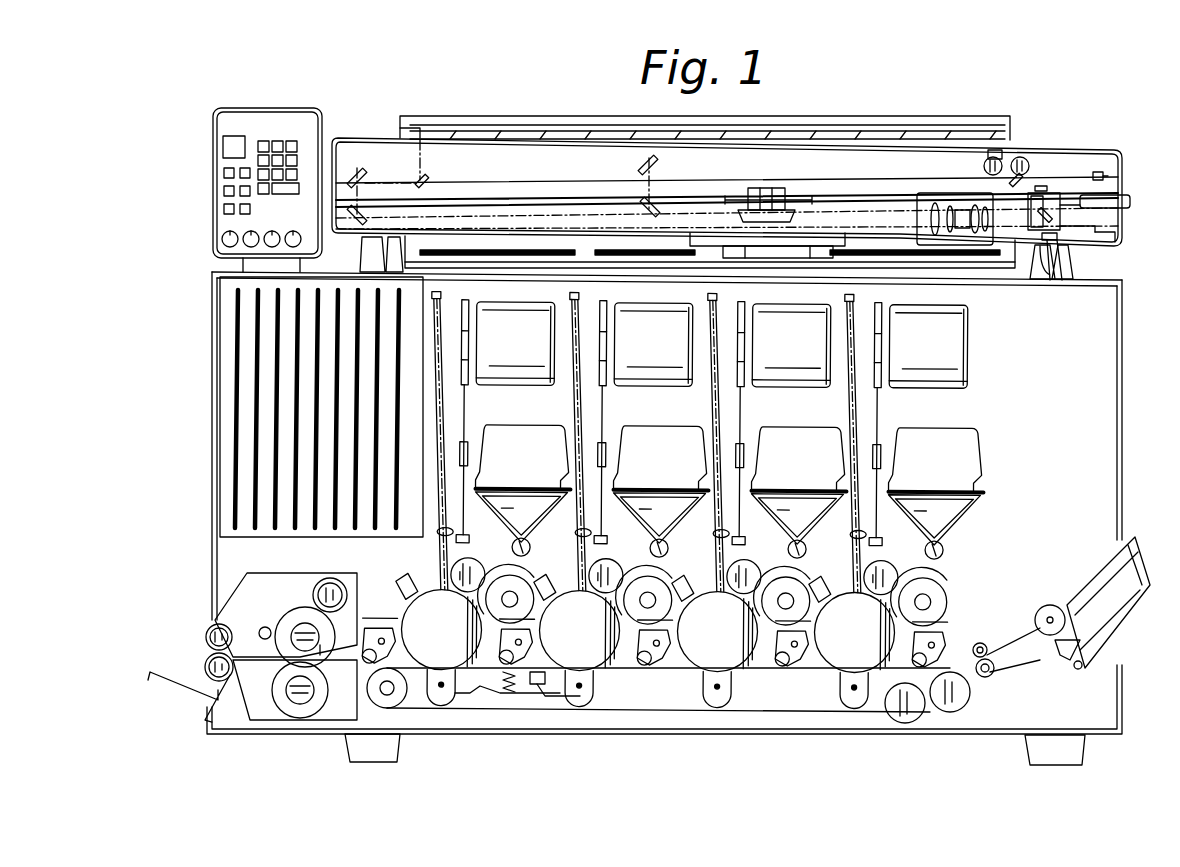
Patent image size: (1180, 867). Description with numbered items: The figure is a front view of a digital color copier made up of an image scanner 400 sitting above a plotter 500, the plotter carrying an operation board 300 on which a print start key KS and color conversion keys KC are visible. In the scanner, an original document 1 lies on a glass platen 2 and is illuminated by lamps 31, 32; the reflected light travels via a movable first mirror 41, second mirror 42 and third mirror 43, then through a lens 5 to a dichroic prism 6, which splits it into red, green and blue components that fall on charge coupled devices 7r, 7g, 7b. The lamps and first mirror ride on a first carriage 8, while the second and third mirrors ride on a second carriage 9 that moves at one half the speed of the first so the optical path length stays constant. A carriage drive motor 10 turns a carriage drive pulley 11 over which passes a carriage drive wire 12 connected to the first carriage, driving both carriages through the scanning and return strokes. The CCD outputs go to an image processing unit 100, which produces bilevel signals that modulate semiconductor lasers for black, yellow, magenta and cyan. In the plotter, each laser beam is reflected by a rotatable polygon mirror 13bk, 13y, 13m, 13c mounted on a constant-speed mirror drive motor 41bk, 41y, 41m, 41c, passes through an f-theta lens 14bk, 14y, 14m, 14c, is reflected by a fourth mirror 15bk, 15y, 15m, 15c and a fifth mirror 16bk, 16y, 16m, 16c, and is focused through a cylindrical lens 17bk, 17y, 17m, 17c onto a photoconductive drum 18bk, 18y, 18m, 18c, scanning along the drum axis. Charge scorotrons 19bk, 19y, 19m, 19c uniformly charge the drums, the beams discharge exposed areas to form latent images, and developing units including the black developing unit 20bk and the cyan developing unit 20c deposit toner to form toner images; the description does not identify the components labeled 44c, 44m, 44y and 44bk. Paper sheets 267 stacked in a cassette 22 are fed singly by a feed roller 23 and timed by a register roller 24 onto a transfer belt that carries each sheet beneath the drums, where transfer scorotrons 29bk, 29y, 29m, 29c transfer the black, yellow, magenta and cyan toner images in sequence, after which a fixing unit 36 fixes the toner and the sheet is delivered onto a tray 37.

The operation board 300 is at (262, 106).
The print start key KS is at (214, 153).
The color conversion keys KC is at (214, 201).
The image scanner 400 is at (555, 112).
The original document 1 is at (832, 128).
The glass platen 2 is at (838, 146).
The second mirror 42 is at (366, 170).
The first mirror 41 is at (428, 181).
The third mirror 43 is at (352, 224).
The second carriage 9 is at (656, 166).
The carriage drive pulley 11 is at (771, 190).
The carriage drive wire 12 is at (800, 200).
The carriage drive motor 10 is at (820, 248).
The lens 5 is at (945, 195).
The lamp 31 is at (1023, 158).
The lamp 32 is at (998, 150).
The dichroic prism 6 is at (1041, 195).
The first carriage 8 is at (1100, 172).
The charge coupled device 7r is at (1068, 187).
The charge coupled device 7g is at (1062, 258).
The charge coupled device 7b is at (1118, 243).
The image processing unit 100 is at (212, 272).
The plotter 500 is at (209, 370).
The fixing unit 36 is at (252, 575).
The tray 37 is at (185, 670).
The polygon mirror 13c is at (482, 300).
The polygon mirror 13m is at (653, 334).
The polygon mirror 13y is at (791, 335).
The polygon mirror 13bk is at (928, 336).
The mirror drive motor 41c is at (528, 384).
The mirror drive motor 41m is at (662, 396).
The mirror drive motor 41y is at (794, 397).
The mirror drive motor 41bk is at (954, 396).
The fifth mirror 16c is at (433, 291).
The fifth mirror 16m is at (596, 435).
The fifth mirror 16y is at (729, 436).
The fifth mirror 16bk is at (871, 437).
The f-theta lens 14c is at (473, 425).
The f-theta lens 14m is at (652, 423).
The f-theta lens 14y is at (790, 424).
The f-theta lens 14bk is at (927, 425).
The fourth mirror 15c is at (514, 546).
The fourth mirror 15m is at (632, 542).
The fourth mirror 15y is at (772, 543).
The fourth mirror 15bk is at (973, 556).
The cylindrical lens 17c is at (445, 528).
The cylindrical lens 17m is at (564, 540).
The cylindrical lens 17y is at (704, 541).
The cylindrical lens 17bk is at (838, 542).
The charge scorotron 19c is at (400, 580).
The charge scorotron 19m is at (562, 575).
The charge scorotron 19y is at (694, 576).
The charge scorotron 19bk is at (835, 577).
The cyan developing unit 20c is at (450, 558).
The black developing unit 20bk is at (949, 571).
The cyan photosensitive drum 44c is at (467, 617).
The magenta photosensitive drum 44m is at (605, 614).
The yellow photosensitive drum 44y is at (743, 615).
The black photosensitive drum 44bk is at (880, 620).
The photoconductive drum 18c is at (400, 612).
The photoconductive drum 18m is at (645, 663).
The photoconductive drum 18y is at (771, 672).
The photoconductive drum 18bk is at (921, 645).
The transfer scorotron 29c is at (458, 698).
The transfer scorotron 29m is at (606, 718).
The transfer scorotron 29y is at (730, 719).
The transfer scorotron 29bk is at (874, 720).
The feed roller 23 is at (1050, 605).
The register roller 24 is at (983, 643).
The cassette 22 is at (1069, 668).
The paper sheet 267 is at (1125, 600).